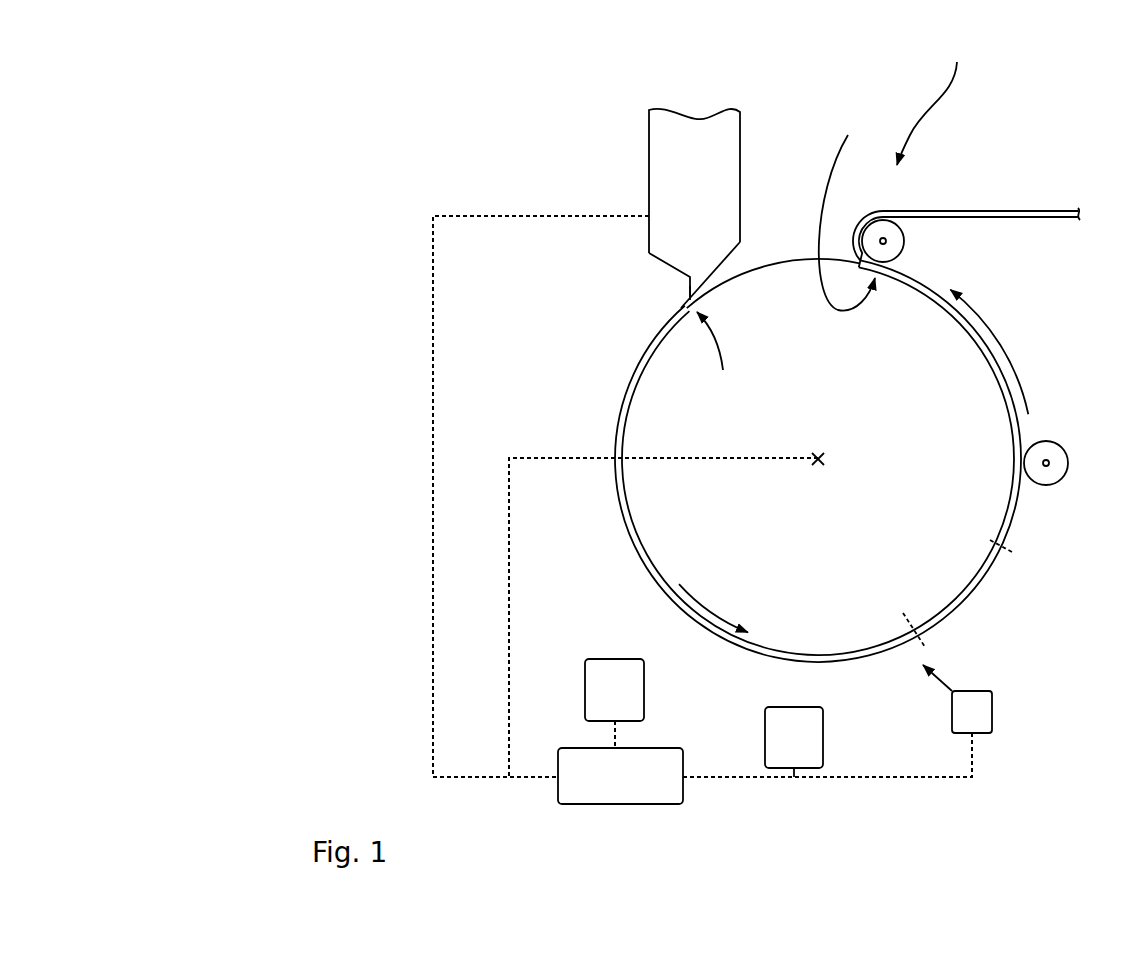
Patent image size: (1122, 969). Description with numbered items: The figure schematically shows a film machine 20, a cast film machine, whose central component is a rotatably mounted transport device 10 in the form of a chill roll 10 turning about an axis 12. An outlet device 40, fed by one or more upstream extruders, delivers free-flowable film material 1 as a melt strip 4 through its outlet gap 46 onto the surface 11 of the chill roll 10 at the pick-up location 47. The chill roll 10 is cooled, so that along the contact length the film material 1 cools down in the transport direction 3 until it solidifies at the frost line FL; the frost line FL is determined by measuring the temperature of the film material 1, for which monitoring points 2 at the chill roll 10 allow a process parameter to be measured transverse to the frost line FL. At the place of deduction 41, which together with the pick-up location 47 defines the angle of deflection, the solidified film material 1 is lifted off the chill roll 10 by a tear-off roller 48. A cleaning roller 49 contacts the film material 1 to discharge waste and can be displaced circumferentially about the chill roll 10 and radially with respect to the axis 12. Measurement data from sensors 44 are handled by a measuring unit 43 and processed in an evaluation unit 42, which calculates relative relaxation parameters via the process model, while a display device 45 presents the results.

The film material 1 is at (995, 211).
The monitoring point 2 is at (909, 620).
The transport direction 3 is at (700, 600).
The melt strip 4 is at (701, 284).
The transport device, chill roll 10 is at (812, 527).
The surface 11 is at (767, 258).
The axis 12 is at (819, 457).
The film machine 20 is at (937, 95).
The outlet device 40 is at (660, 168).
The place of deduction 41 is at (847, 207).
The evaluation unit 42 is at (602, 793).
The measuring unit 43 is at (776, 756).
The sensors 44 is at (954, 729).
The display device 45 is at (597, 708).
The outlet gap 46 is at (690, 293).
The pick-up location 47 is at (718, 356).
The tear-off roller 48 is at (904, 241).
The cleaning roller 49 is at (1046, 485).
The frost line FL is at (989, 535).